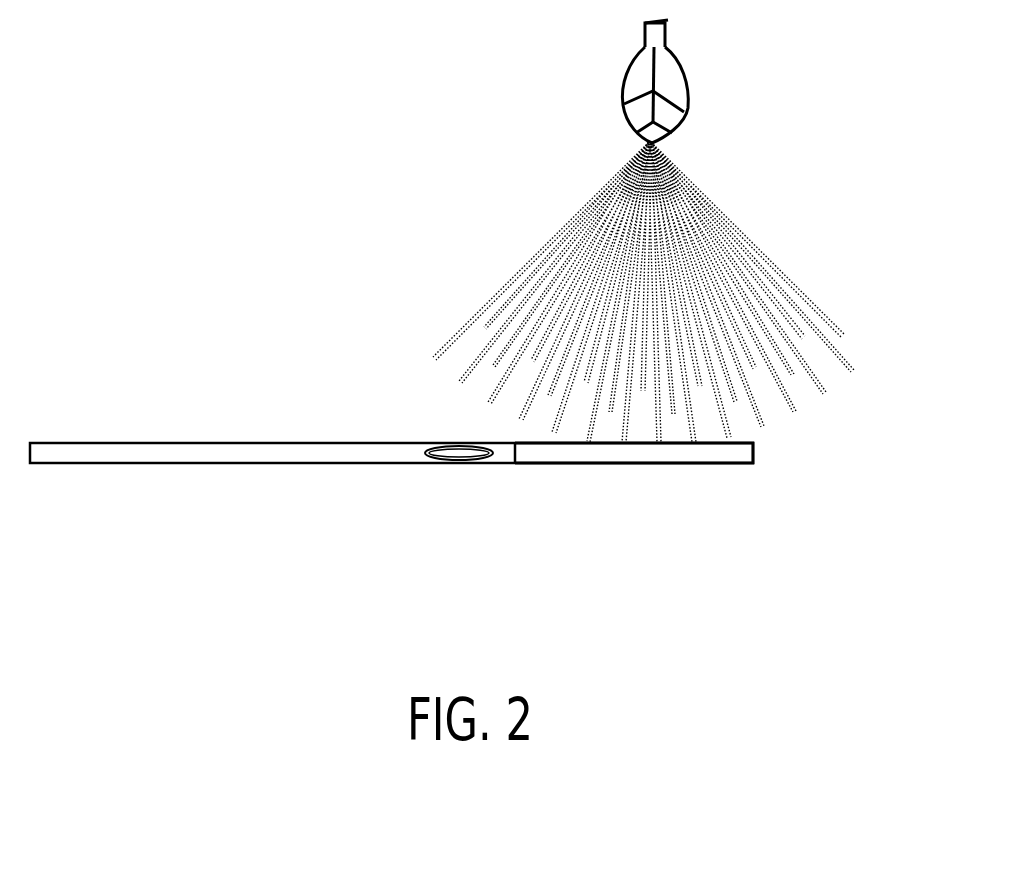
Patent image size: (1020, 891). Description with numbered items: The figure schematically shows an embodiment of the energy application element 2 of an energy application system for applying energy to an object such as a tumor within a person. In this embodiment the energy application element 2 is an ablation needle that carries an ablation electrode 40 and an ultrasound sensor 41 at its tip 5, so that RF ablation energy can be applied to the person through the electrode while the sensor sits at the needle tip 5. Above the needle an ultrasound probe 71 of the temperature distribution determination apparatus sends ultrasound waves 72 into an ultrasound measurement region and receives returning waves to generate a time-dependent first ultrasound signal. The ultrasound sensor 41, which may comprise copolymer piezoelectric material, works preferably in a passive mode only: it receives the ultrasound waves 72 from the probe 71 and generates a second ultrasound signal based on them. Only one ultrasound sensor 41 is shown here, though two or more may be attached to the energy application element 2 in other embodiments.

The energy application element 2 is at (254, 406).
The tip 5 is at (703, 533).
The ablation electrode 40 is at (617, 455).
The ultrasound sensor 41 is at (459, 453).
The ultrasound probe 71 is at (668, 68).
The ultrasound waves 72 is at (824, 262).